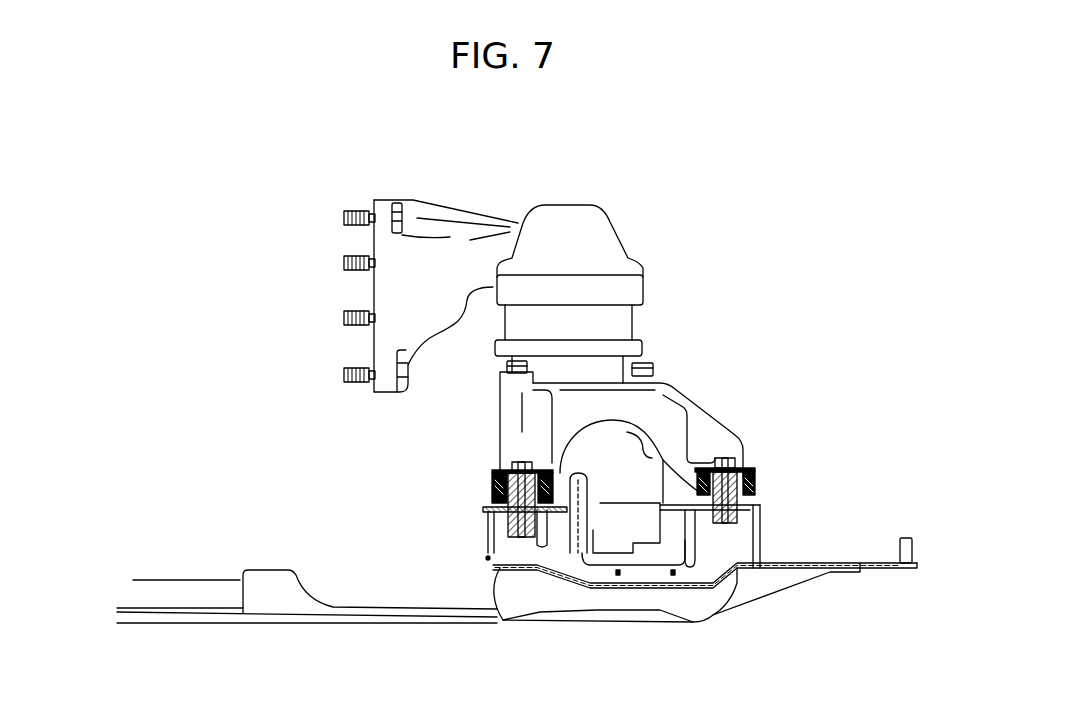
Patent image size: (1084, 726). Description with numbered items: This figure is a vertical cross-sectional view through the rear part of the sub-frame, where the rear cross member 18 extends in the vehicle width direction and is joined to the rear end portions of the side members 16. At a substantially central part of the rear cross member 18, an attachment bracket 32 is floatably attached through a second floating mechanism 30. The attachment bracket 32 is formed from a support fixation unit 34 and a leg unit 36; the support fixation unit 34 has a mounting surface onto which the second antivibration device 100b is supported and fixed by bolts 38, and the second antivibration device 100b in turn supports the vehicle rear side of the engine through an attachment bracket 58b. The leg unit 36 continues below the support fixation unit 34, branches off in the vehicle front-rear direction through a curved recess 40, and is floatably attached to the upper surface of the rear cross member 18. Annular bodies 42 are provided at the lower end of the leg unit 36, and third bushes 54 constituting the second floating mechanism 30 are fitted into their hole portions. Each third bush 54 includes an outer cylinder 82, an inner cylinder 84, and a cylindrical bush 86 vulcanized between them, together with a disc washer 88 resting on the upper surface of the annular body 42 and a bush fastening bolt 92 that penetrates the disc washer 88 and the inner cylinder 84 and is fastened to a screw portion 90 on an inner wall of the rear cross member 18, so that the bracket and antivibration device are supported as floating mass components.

The side members 16 is at (231, 632).
The rear cross member 18 is at (704, 600).
The second floating mechanism 30 is at (799, 421).
The attachment bracket 32 is at (690, 395).
The support fixation unit 34 is at (500, 385).
The leg unit 36 is at (507, 420).
The bolts 38 is at (493, 351).
The recess 40 is at (710, 452).
The annular bodies 42 is at (565, 470).
The third bushes 54 is at (498, 470).
The attachment bracket 58b is at (440, 203).
The outer cylinder 82 is at (490, 484).
The inner cylinder 84 is at (492, 520).
The cylindrical bush 86 is at (508, 495).
The disc washer 88 is at (505, 470).
The screw portion 90 is at (520, 540).
The bush fastening bolt 92 is at (525, 462).
The second antivibration device 100b is at (641, 243).